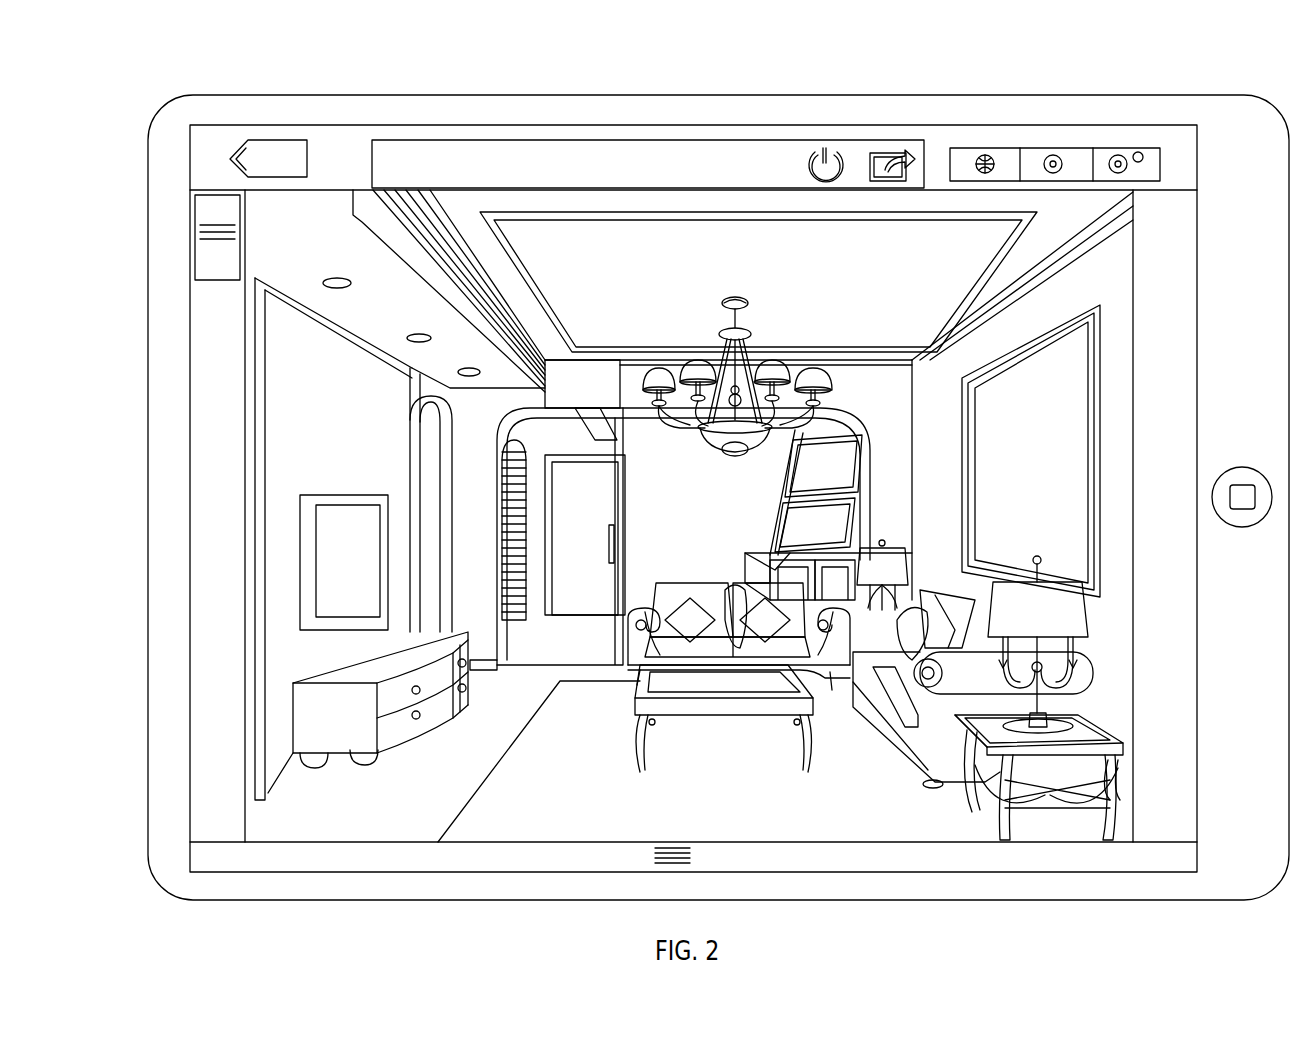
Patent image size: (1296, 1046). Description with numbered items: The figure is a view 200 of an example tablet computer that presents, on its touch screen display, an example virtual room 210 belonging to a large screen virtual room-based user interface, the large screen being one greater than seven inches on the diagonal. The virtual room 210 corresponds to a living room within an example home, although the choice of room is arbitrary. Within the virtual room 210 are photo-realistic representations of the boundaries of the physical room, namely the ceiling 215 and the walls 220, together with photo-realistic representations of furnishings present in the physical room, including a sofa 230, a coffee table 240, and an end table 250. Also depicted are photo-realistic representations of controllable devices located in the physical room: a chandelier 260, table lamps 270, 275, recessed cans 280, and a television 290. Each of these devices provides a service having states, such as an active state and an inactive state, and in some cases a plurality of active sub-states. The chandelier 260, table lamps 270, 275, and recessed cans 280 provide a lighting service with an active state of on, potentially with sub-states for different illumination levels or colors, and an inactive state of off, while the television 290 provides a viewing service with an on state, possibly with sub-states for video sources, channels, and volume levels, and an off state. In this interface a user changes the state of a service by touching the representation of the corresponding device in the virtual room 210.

The view 200 is at (145, 95).
The virtual room 210 is at (1133, 250).
The ceiling 215 is at (1085, 222).
The walls 220 is at (323, 362).
The sofa 230 is at (903, 745).
The coffee table 240 is at (728, 718).
The end table 250 is at (990, 812).
The chandelier 260 is at (855, 394).
The table lamp 270 is at (1088, 614).
The table lamp 275 is at (892, 545).
The recessed cans 280 is at (345, 308).
The television 290 is at (343, 520).